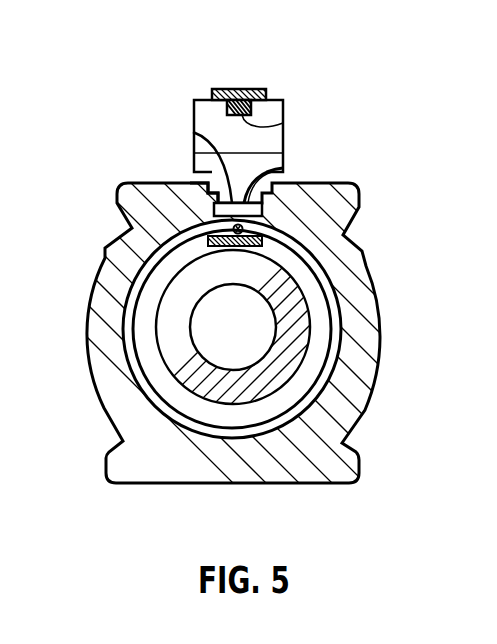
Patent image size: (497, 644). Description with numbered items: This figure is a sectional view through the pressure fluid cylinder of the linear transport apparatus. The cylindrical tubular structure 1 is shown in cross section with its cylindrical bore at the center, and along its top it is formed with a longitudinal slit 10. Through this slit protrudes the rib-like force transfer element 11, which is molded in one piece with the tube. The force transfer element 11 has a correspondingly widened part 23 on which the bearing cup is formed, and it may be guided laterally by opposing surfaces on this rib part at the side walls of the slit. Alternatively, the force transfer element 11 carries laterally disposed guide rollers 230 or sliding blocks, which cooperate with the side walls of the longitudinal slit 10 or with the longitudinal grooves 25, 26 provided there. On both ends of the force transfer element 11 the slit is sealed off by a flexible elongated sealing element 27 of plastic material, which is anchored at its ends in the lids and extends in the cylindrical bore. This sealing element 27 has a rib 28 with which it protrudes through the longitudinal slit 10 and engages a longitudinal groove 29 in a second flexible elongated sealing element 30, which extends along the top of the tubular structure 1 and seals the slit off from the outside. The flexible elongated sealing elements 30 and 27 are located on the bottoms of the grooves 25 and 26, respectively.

The tubular structure 1 is at (365, 334).
The longitudinal slit 10 is at (283, 177).
The force transfer element 11 is at (283, 168).
The widened part 23 is at (270, 142).
The longitudinal groove 25 is at (193, 132).
The longitudinal groove 26 is at (263, 208).
The flexible elongated sealing element 27 is at (210, 238).
The rib 28 is at (245, 229).
The longitudinal groove 29 is at (285, 124).
The flexible elongated sealing element 30 is at (237, 92).
The guide rollers 230 is at (200, 183).